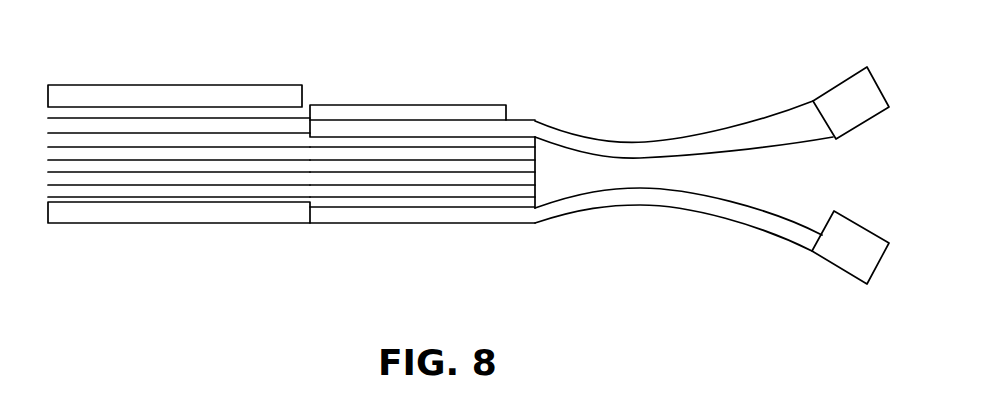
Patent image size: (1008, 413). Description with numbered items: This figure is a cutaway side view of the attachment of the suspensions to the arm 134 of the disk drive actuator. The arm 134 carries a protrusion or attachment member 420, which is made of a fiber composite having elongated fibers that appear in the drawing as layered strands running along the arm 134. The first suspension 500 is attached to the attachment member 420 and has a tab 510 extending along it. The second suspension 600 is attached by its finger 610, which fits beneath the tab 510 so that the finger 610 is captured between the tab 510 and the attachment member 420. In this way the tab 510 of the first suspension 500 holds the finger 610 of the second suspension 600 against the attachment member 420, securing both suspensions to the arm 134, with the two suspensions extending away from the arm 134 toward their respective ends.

The arm 134 is at (154, 178).
The attachment member 420 is at (360, 178).
The tab 510 is at (367, 112).
The finger 610 is at (473, 130).
The second suspension 600 is at (616, 148).
The first suspension element 500 is at (612, 200).